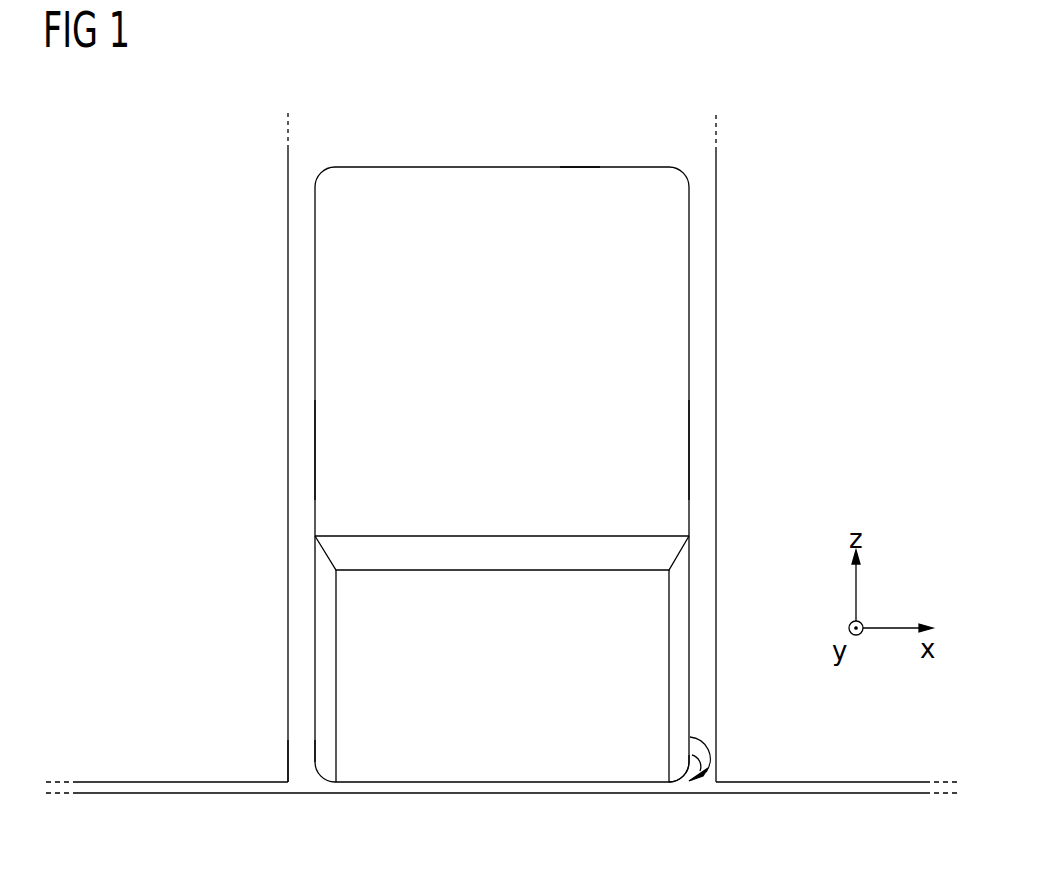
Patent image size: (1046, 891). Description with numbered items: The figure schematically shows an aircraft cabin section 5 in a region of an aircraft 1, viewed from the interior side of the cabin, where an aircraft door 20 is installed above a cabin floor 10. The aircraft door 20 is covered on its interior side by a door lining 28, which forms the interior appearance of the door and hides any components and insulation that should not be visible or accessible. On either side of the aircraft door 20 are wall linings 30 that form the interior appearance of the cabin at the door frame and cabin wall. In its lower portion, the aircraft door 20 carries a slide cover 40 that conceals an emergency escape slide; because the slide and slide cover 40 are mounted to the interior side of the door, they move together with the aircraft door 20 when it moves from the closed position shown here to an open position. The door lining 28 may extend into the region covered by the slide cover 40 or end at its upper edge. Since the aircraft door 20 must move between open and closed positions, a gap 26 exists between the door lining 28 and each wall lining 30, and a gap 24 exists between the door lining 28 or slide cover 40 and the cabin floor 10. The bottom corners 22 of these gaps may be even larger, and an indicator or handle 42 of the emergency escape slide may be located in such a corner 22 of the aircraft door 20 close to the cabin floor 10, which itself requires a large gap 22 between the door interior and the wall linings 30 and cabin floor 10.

The aircraft 1 is at (150, 330).
The aircraft cabin section 5 is at (708, 101).
The cabin floor 10 is at (168, 795).
The aircraft door 20 is at (449, 167).
The bottom corners 22 is at (303, 765).
The gap 24 is at (502, 790).
The gap 26 is at (310, 445).
The door lining 28 is at (563, 190).
The wall linings 30 is at (288, 215).
The slide cover 40 is at (587, 752).
The indicator or handle 42 is at (707, 790).